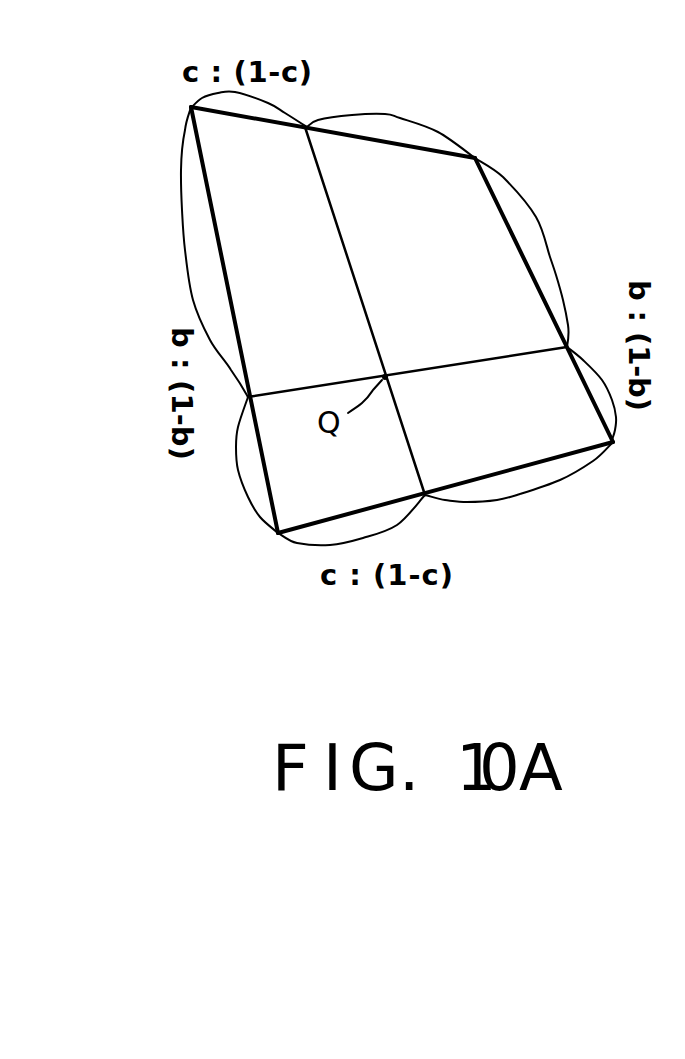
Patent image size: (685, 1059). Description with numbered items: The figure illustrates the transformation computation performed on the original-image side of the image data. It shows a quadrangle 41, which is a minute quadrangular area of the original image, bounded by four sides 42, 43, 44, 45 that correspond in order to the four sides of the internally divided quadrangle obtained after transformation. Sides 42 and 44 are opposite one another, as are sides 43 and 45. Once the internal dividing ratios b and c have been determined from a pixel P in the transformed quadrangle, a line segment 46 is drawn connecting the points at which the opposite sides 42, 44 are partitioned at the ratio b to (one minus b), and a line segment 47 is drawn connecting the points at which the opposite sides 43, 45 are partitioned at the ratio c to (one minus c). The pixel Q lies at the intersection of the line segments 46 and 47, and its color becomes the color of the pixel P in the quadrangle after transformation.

The quadrangle 41 is at (347, 173).
The side of quadrangle 42 is at (263, 473).
The side of quadrangle 43 is at (478, 481).
The side of quadrangle 44 is at (537, 268).
The side of quadrangle 45 is at (432, 143).
The line segment 46 is at (433, 367).
The line segment 47 is at (355, 283).